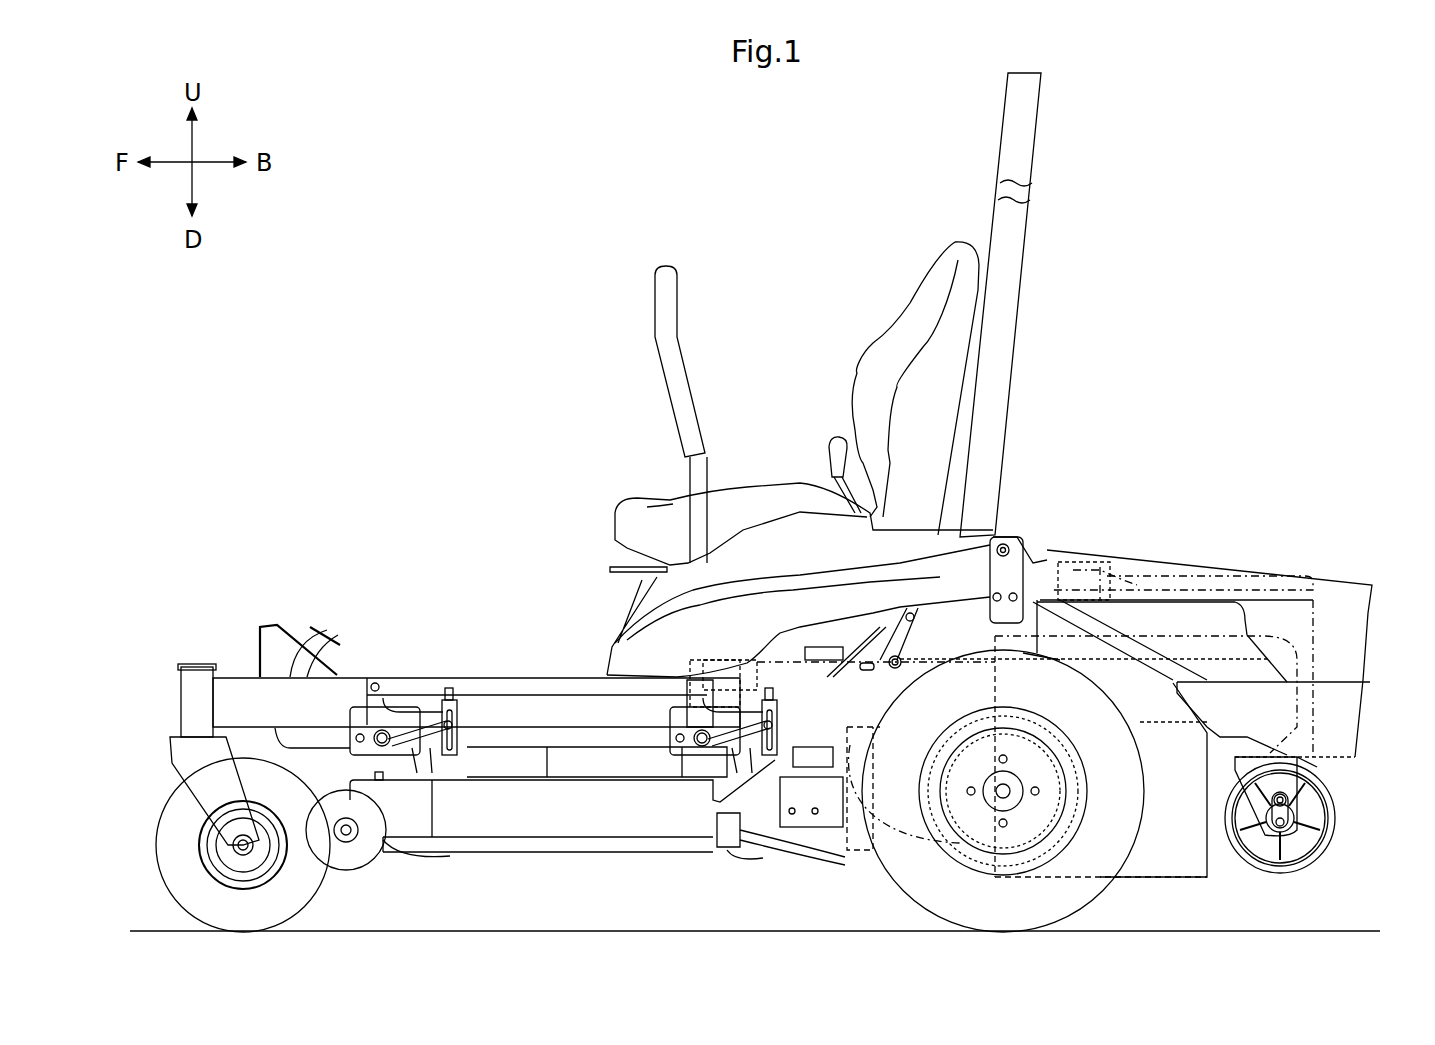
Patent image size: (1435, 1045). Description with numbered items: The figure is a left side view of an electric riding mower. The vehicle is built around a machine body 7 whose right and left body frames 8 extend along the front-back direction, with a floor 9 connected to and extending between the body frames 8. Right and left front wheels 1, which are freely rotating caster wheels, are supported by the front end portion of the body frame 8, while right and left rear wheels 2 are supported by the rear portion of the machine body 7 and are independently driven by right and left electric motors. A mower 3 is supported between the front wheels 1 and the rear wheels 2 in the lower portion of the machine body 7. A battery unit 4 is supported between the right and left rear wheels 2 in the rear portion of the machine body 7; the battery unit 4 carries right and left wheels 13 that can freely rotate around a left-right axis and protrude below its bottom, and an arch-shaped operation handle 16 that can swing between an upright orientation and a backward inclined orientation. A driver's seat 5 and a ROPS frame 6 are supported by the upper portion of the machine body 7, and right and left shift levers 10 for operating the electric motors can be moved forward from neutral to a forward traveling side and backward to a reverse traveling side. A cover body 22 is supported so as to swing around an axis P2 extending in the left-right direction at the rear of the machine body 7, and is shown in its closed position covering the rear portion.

The front wheel 1 is at (185, 855).
The rear wheel 2 is at (1085, 857).
The mower 3 is at (582, 815).
The battery unit 4 is at (1317, 769).
The driver's seat 5 is at (880, 373).
The ROPS frame 6 is at (1005, 146).
The machine body 7 is at (469, 652).
The body frame 8 is at (548, 707).
The floor 9 is at (350, 665).
The shift lever 10 is at (665, 272).
The wheel 13 is at (1307, 857).
The operation handle 16 is at (1170, 593).
The cover body 22 is at (1343, 722).
The axis P2 is at (940, 523).